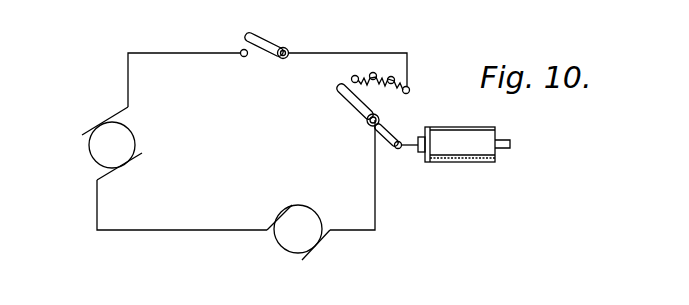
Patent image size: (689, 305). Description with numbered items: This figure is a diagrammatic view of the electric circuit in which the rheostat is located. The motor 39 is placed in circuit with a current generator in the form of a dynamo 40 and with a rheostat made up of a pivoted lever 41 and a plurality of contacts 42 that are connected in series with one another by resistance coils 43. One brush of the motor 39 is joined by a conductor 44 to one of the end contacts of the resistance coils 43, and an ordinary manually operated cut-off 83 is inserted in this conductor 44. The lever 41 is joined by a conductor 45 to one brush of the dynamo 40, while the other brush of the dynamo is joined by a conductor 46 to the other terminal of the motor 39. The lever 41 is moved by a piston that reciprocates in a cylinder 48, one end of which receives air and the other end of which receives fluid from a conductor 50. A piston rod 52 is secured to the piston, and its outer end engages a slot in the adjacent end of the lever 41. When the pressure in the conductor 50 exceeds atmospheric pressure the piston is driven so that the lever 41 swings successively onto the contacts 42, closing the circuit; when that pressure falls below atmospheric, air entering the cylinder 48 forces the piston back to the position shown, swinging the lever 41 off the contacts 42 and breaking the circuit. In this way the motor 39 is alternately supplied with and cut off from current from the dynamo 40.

The motor 39 is at (139, 142).
The dynamo 40 is at (288, 218).
The pivoted lever 41 is at (356, 107).
The contacts 42 is at (383, 96).
The resistance coils 43 is at (396, 88).
The conductor 44 is at (200, 58).
The conductor 45 is at (375, 157).
The conductor 46 is at (170, 229).
The cylinder 48 is at (456, 144).
The conductor 50 is at (509, 141).
The piston rod 52 is at (413, 149).
The manually operated cut-off 83 is at (271, 45).